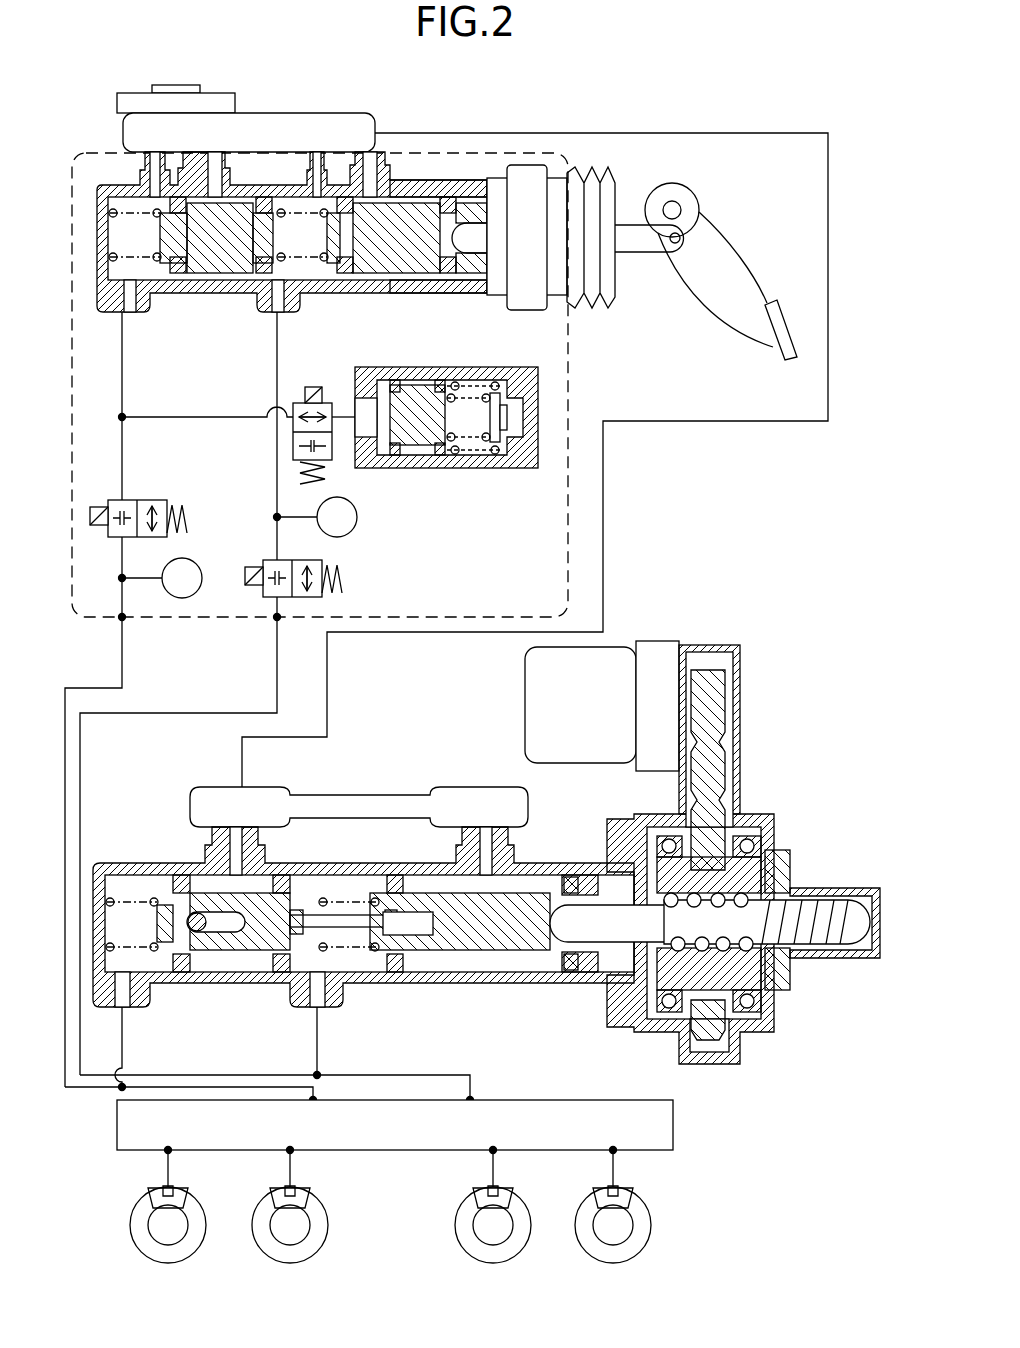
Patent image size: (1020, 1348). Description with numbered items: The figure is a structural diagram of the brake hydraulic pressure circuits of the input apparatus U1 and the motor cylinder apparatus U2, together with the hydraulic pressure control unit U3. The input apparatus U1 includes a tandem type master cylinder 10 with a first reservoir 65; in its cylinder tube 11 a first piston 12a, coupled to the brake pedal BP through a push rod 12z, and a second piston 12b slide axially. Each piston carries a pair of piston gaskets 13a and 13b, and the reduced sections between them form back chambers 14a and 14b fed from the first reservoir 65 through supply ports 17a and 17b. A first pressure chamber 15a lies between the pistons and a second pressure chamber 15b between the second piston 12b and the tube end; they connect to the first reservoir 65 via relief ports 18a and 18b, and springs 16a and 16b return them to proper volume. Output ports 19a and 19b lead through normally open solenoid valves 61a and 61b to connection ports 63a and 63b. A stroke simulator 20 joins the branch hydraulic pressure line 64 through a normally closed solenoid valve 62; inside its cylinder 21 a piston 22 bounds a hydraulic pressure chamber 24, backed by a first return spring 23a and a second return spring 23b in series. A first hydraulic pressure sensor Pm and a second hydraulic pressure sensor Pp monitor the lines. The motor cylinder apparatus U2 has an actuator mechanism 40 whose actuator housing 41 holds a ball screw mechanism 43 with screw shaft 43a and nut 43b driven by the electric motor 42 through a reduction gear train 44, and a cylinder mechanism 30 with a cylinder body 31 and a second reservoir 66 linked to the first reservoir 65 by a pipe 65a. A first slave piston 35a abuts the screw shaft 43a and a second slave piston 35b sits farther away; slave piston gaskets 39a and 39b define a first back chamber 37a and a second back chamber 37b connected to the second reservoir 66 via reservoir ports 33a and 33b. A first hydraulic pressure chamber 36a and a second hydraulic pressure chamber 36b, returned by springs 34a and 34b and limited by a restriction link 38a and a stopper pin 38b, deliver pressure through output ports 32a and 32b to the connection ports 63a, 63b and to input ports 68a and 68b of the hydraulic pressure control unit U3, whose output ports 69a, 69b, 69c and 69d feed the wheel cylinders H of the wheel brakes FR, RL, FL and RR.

The master cylinder 10 is at (432, 175).
The cylinder tube 11 is at (462, 180).
The first piston 12a is at (406, 228).
The second piston 12b is at (213, 260).
The push rod 12z is at (483, 233).
The piston gasket 13a is at (264, 274).
The piston gasket 13b is at (180, 275).
The back chamber 14a is at (398, 283).
The back chamber 14b is at (205, 286).
The first pressure chamber 15a is at (290, 228).
The second pressure chamber 15b is at (127, 230).
The spring 16a is at (296, 237).
The spring 16b is at (110, 288).
The supply port 17a is at (375, 180).
The supply port 17b is at (213, 182).
The relief port 18a is at (330, 188).
The relief port 18b is at (165, 186).
The output port 19a is at (281, 295).
The output port 19b is at (124, 292).
The stroke simulator 20 is at (452, 427).
The cylinder 21 is at (413, 370).
The piston 22 is at (413, 425).
The first return spring 23a is at (473, 452).
The second return spring 23b is at (448, 434).
The hydraulic pressure chamber 24 is at (380, 452).
The cylinder mechanism 30 is at (552, 846).
The cylinder body 31 is at (588, 866).
The output port 32a is at (322, 1006).
The output port 32b is at (124, 1007).
The reservoir port 33a is at (458, 850).
The reservoir port 33b is at (206, 848).
The spring 34a is at (378, 895).
The spring 34b is at (118, 880).
The first slave piston 35a is at (512, 948).
The second slave piston 35b is at (268, 936).
The first hydraulic pressure chamber 36a is at (346, 914).
The second hydraulic pressure chamber 36b is at (140, 916).
The first back chamber 37a is at (467, 964).
The second back chamber 37b is at (230, 963).
The restriction link 38a is at (320, 910).
The stopper pin 38b is at (197, 934).
The slave piston gasket 39a is at (283, 968).
The slave piston gasket 39b is at (186, 970).
The actuator mechanism 40 is at (790, 815).
The actuator housing 41 is at (790, 856).
The electric motor 42 is at (523, 690).
The ball screw mechanism 43 is at (845, 895).
The screw shaft 43a is at (624, 930).
The nut 43b is at (752, 965).
The reduction gear train 44 is at (728, 755).
The normally open solenoid valve 61a is at (263, 560).
The normally open solenoid valve 61b is at (160, 500).
The normally closed solenoid valve 62 is at (324, 403).
The connection port 63a is at (272, 626).
The connection port 63b is at (125, 630).
The branch hydraulic pressure line 64 is at (124, 393).
The first reservoir 65 is at (123, 130).
The pipe 65a is at (604, 508).
The second reservoir 66 is at (393, 790).
The input port 68a is at (473, 1098).
The input port 68b is at (317, 1097).
The output port 69a is at (615, 1153).
The output port 69b is at (495, 1153).
The output port 69c is at (292, 1153).
The output port 69d is at (170, 1153).
The brake pedal BP is at (775, 300).
The first hydraulic pressure sensor Pm is at (316, 517).
The second hydraulic pressure sensor Pp is at (161, 578).
The input apparatus U1 is at (574, 362).
The motor cylinder apparatus U2 is at (755, 615).
The hydraulic pressure control unit U3 is at (679, 1122).
The wheel cylinder H is at (188, 1185).
The wheel brake FL is at (203, 1238).
The wheel brake FR is at (648, 1238).
The wheel brake RL is at (528, 1238).
The wheel brake RR is at (325, 1238).